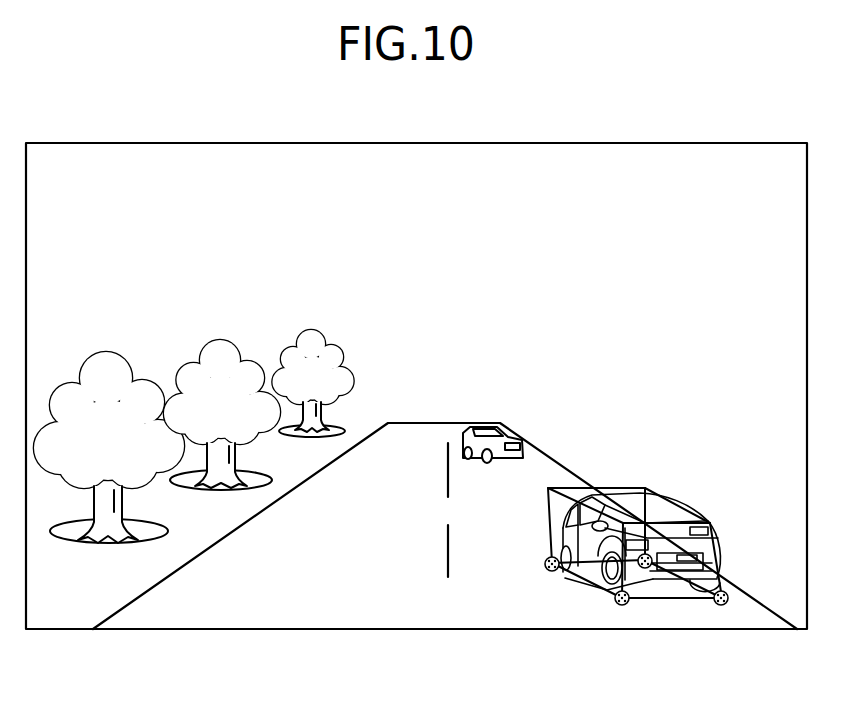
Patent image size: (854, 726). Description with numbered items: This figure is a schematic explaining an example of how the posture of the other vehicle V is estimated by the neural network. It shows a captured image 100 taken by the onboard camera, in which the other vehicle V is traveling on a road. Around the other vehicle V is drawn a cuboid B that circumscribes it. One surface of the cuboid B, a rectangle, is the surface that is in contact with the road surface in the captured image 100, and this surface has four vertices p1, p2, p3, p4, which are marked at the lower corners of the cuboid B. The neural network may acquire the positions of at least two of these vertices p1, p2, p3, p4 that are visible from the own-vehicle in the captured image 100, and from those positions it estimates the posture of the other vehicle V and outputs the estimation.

The captured image 100 is at (757, 119).
The cuboid B is at (630, 487).
The other vehicle V is at (712, 531).
The vertex p1 is at (722, 606).
The vertex p2 is at (622, 606).
The vertex p3 is at (647, 568).
The vertex p4 is at (541, 563).